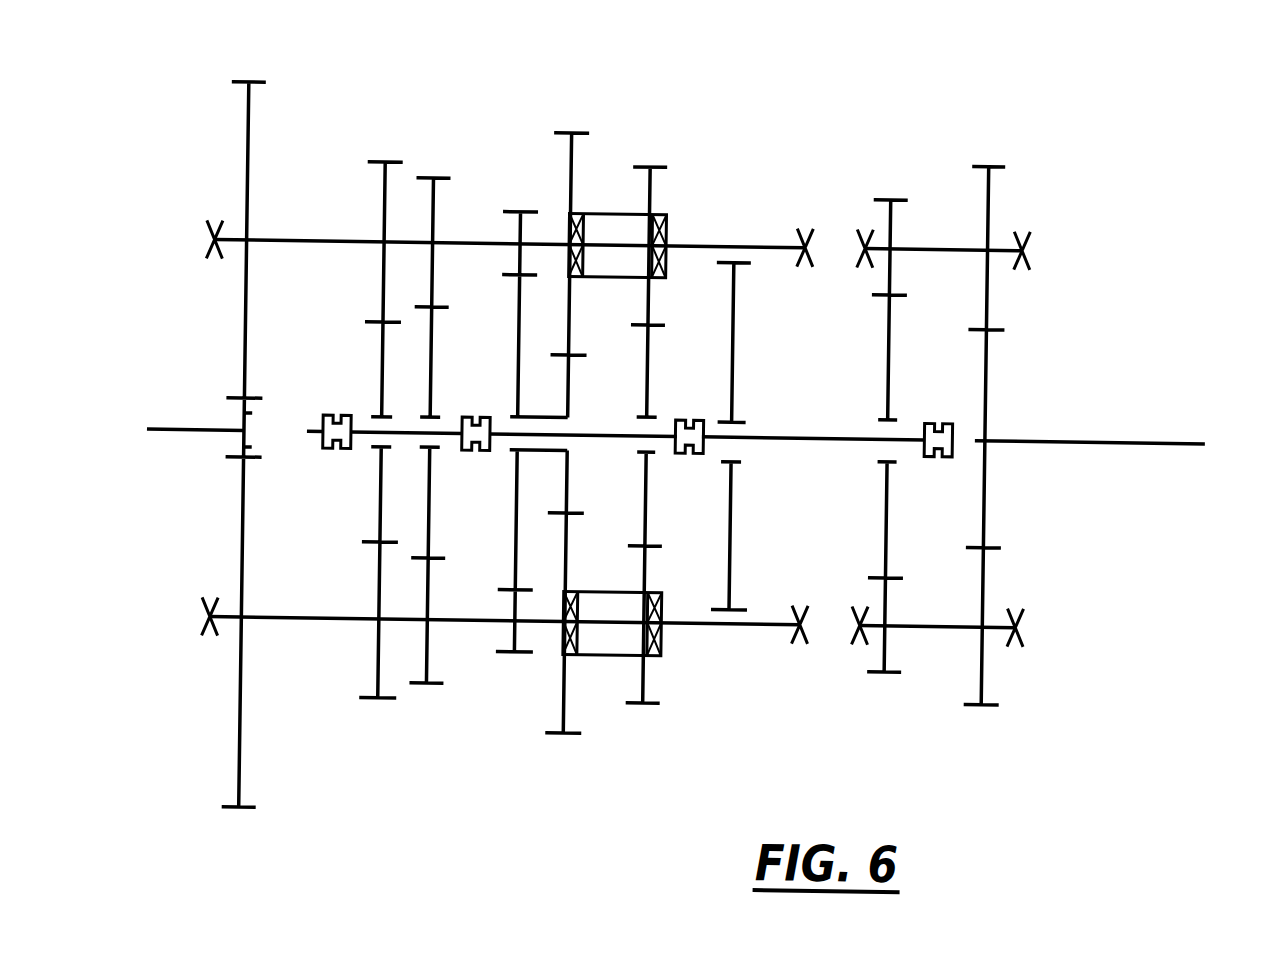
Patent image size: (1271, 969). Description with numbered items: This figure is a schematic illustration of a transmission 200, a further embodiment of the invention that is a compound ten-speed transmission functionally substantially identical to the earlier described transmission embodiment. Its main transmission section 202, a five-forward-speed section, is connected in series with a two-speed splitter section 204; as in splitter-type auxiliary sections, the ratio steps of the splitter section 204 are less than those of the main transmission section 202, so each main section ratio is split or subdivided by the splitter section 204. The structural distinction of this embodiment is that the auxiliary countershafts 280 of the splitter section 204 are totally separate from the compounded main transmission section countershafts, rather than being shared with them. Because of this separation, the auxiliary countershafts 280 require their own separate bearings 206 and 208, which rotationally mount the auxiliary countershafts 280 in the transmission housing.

The transmission 200 is at (676, 426).
The main transmission section 202 is at (504, 754).
The splitter section 204 is at (959, 738).
The bearing 206 is at (863, 654).
The bearing 208 is at (1024, 227).
The auxiliary countershaft 280 is at (950, 241).